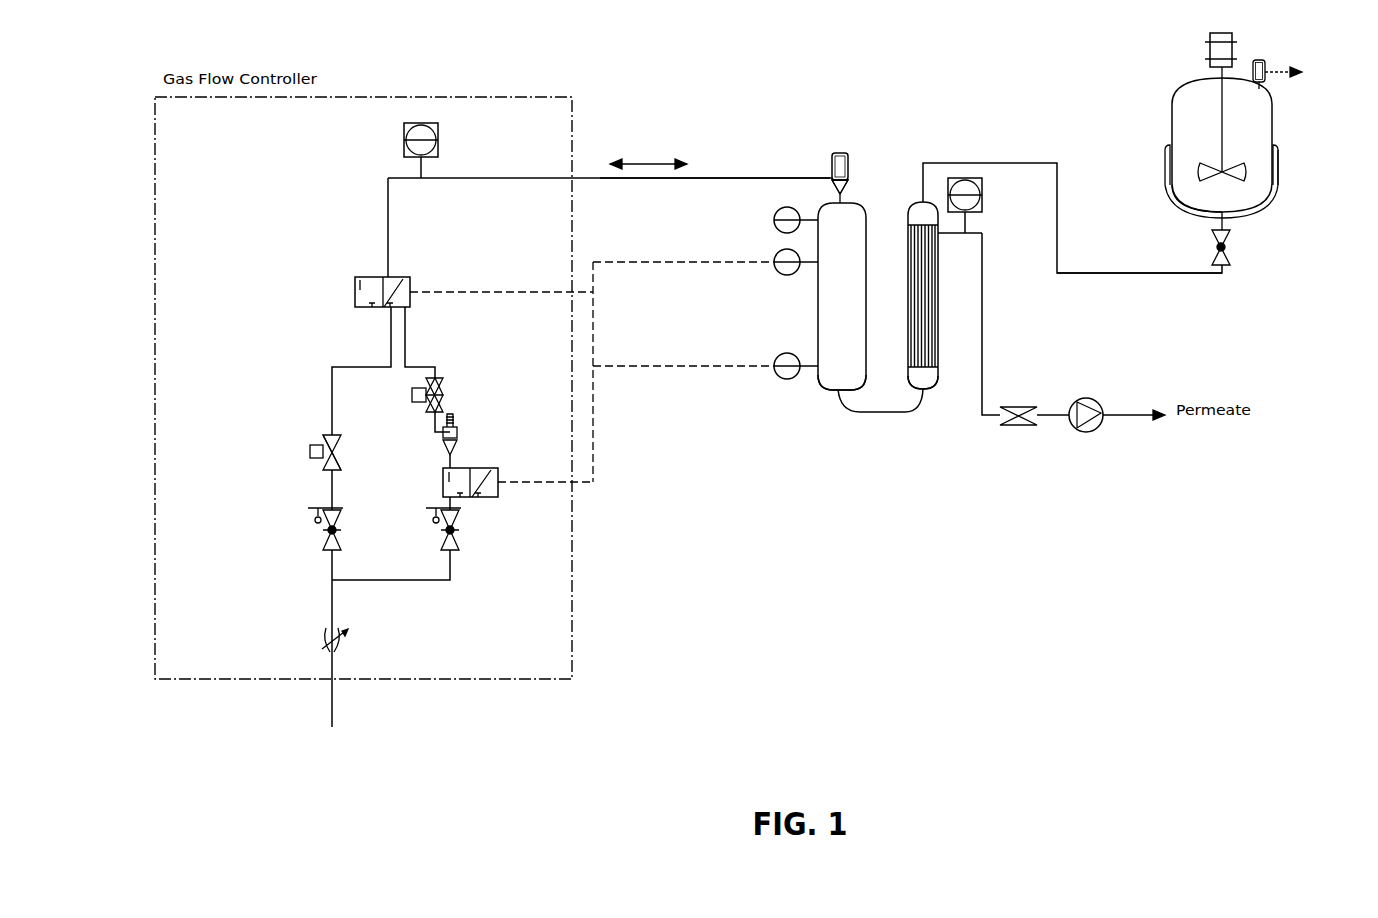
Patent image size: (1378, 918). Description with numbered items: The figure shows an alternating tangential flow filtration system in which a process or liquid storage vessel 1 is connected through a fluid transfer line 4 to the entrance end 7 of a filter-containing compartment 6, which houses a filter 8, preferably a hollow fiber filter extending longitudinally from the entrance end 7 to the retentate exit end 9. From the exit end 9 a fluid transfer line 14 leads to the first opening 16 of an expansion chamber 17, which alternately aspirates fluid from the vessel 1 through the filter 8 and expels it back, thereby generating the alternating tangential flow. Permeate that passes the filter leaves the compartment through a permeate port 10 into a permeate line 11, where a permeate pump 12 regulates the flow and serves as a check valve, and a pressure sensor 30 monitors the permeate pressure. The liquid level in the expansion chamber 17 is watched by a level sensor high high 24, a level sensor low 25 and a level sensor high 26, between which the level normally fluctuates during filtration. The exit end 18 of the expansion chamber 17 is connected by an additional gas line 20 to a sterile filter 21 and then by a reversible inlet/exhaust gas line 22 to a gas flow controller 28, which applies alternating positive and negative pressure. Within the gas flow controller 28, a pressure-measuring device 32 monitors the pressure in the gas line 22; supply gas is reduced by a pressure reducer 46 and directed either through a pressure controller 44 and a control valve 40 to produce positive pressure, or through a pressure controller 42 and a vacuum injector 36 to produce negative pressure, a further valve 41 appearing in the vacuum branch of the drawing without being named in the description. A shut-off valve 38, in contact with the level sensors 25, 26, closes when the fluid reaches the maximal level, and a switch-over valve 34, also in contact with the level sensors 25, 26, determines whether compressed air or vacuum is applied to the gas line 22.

The process vessel 1 is at (1177, 92).
The fluid transfer line 4 is at (1135, 273).
The filter-containing compartment 6 is at (908, 272).
The entrance end 7 is at (920, 185).
The filter 8 is at (923, 296).
The retentate exit end 9 is at (933, 392).
The permeate port 10 is at (968, 226).
The permeate line 11 is at (982, 328).
The permeate pump 12 is at (1087, 398).
The fluid transfer line 14 is at (879, 414).
The first opening 16 is at (836, 393).
The expansion chamber 17 is at (840, 296).
The exit end 18 is at (848, 210).
The additional gas line 20 is at (832, 178).
The sterile filter 21 is at (841, 153).
The gas line 22 is at (714, 178).
The level sensor high high 24 is at (774, 214).
The level sensor low 25 is at (778, 378).
The level sensor high 26 is at (779, 273).
The gas flow controller 28 is at (361, 97).
The pressure-measuring device 30 is at (968, 178).
The pressure-measuring device 32 is at (438, 140).
The switch-over valve 34 is at (407, 277).
The vacuum injector 36 is at (457, 432).
The shut-off valve 38 is at (498, 470).
The control valve 40 is at (310, 452).
The control valve 41 is at (443, 398).
The pressure controller 42 is at (454, 530).
The pressure controller 44 is at (328, 530).
The pressure reducer 46 is at (330, 641).